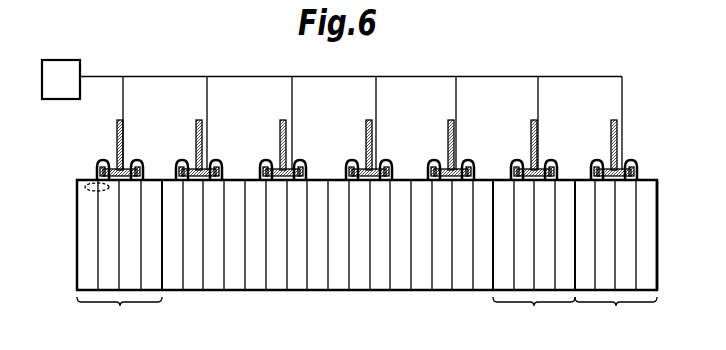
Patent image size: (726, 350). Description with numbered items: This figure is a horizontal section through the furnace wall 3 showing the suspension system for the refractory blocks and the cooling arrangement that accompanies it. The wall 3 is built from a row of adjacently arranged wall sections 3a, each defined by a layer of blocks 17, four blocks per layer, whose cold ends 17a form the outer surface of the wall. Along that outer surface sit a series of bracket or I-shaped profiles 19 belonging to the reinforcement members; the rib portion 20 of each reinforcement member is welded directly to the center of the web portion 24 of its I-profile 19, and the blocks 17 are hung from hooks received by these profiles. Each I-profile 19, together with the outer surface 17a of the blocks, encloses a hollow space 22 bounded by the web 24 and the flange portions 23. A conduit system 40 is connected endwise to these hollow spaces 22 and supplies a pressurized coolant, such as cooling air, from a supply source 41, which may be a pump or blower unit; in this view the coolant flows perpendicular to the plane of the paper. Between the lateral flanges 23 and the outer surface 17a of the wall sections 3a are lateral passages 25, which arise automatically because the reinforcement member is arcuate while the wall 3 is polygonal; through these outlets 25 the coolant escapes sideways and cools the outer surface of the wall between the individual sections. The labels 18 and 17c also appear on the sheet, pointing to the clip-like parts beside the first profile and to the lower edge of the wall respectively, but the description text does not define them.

The furnace wall 3 is at (293, 300).
The wall sections 3a is at (367, 260).
The blocks 17 is at (357, 235).
The cold ends 17a is at (84, 184).
The cell connection 17c is at (485, 344).
The clamping clips 18 is at (99, 176).
The I-shaped profile 19 is at (127, 168).
The rib portion 20 is at (113, 167).
The hollow space 22 is at (283, 175).
The flange portions 23 is at (517, 176).
The web portion 24 is at (530, 165).
The lateral passages 25 is at (649, 179).
The conduit system 40 is at (108, 72).
The supply source 41 is at (68, 100).